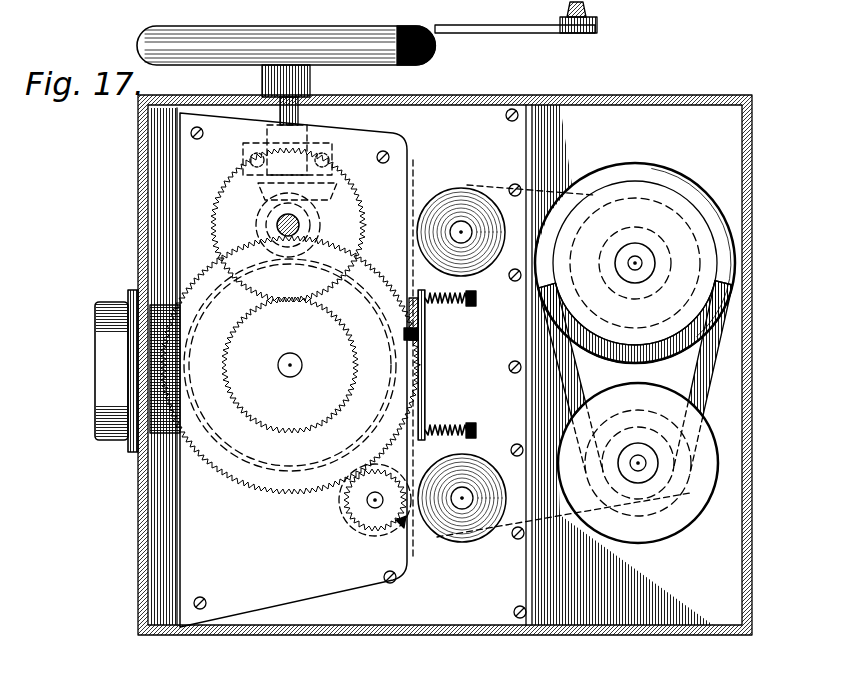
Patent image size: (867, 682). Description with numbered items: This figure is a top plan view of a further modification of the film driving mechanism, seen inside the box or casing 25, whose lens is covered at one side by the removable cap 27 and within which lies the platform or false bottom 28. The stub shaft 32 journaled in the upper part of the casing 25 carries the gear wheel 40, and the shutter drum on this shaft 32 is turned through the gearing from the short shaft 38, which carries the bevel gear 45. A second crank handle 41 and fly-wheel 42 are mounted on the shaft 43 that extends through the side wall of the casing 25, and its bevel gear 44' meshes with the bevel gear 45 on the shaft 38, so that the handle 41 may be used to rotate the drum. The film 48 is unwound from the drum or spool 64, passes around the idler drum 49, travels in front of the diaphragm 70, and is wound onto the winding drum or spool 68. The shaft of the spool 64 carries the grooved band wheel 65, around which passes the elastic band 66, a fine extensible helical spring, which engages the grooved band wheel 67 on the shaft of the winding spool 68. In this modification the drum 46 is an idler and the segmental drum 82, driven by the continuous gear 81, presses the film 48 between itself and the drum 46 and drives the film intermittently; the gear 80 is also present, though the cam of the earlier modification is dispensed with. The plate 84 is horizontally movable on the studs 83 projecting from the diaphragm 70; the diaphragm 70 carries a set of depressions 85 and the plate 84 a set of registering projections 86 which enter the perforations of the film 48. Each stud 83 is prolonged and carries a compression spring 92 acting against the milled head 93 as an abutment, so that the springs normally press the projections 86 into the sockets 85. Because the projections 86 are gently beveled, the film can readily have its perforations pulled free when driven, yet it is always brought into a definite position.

The casing 25 is at (753, 432).
The removable cap 27 is at (103, 352).
The platform or false bottom 28 is at (499, 365).
The stub shaft 32 is at (292, 357).
The short shaft 38 is at (278, 226).
The gear wheel 40 is at (262, 432).
The crank handle 41 is at (597, 10).
The fly-wheel 42 is at (436, 46).
The shaft 43 is at (312, 78).
The bearing block 44' is at (259, 157).
The bevel gear 45 is at (262, 208).
The drum 46 is at (468, 528).
The film 48 is at (557, 527).
The idler drum 49 is at (462, 197).
The unwinding drum or spool 64 is at (665, 222).
The grooved band wheel 65 is at (641, 170).
The elastic band 66 is at (703, 372).
The grooved band wheel 67 is at (680, 495).
The winding drum or spool 68 is at (653, 463).
The diaphragm 70 is at (409, 553).
The gear 80 is at (230, 485).
The continuous gear 81 is at (355, 527).
The segmental drum 82 is at (400, 530).
The studs 83 is at (480, 432).
The plate 84 is at (426, 370).
The depressions 85 is at (405, 325).
The projections 86 is at (419, 332).
The compression spring 92 is at (425, 303).
The milled head 93 is at (474, 306).